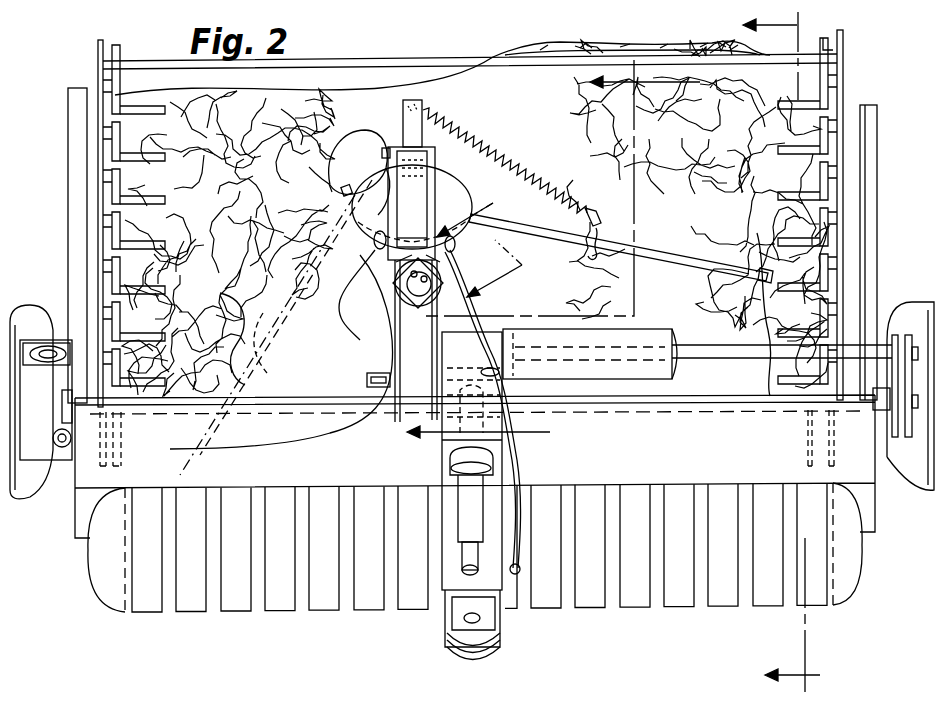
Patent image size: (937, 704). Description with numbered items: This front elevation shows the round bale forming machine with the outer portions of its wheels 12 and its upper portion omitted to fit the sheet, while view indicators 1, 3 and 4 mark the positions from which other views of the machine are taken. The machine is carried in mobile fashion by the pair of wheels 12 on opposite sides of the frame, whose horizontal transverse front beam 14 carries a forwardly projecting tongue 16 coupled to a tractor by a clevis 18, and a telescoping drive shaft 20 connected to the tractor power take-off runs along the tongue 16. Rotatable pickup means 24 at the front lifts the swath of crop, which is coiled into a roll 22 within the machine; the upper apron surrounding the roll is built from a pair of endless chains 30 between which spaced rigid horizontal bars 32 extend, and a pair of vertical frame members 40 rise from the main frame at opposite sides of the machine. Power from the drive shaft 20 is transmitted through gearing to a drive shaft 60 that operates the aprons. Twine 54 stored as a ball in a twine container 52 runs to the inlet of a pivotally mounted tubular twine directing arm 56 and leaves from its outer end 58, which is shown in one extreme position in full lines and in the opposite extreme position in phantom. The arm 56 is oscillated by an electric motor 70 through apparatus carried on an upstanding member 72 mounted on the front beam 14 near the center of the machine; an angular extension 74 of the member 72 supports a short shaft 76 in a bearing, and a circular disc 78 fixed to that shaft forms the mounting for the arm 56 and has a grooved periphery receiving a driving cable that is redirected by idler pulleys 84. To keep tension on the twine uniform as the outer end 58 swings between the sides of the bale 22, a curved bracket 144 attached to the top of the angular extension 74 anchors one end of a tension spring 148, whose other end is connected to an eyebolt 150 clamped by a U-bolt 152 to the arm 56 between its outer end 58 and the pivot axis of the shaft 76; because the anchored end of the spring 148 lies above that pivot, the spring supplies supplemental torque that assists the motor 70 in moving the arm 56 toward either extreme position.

The section line 1- 1 is at (793, 354).
The section line 3- 3 is at (561, 256).
The section line 4- 4 is at (490, 242).
The wheels 12 is at (22, 500).
The front beam 14 is at (475, 466).
The tongue 16 is at (442, 578).
The clevis 18 is at (500, 625).
The telescoping drive shaft 20 is at (462, 519).
The roll of crop material 22 is at (472, 218).
The rotatable pickup means 24 is at (637, 606).
The endless chains 30 is at (100, 85).
The rigid horizontal bars 32 is at (355, 61).
The vertical frame members 40 is at (68, 152).
The twine container 52 is at (60, 340).
The twine 54 is at (343, 430).
The twine directing arm 56 is at (688, 264).
The outer end of twine directing arm 58 is at (762, 268).
The drive shaft 60 is at (765, 360).
The electric motor 70 is at (400, 298).
The upstanding member 72 is at (395, 355).
The angular extension 74 is at (437, 150).
The short shaft 76 is at (448, 199).
The circular disc 78 is at (359, 172).
The idler pulleys 84 is at (372, 252).
The bracket 144 is at (403, 113).
The tension spring 148 is at (508, 172).
The eyebolt 150 is at (602, 222).
The U-bolt 152 is at (598, 242).